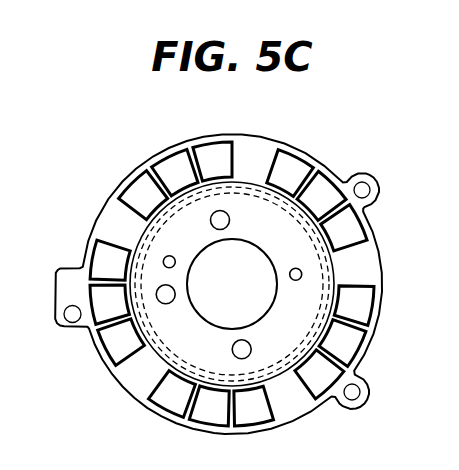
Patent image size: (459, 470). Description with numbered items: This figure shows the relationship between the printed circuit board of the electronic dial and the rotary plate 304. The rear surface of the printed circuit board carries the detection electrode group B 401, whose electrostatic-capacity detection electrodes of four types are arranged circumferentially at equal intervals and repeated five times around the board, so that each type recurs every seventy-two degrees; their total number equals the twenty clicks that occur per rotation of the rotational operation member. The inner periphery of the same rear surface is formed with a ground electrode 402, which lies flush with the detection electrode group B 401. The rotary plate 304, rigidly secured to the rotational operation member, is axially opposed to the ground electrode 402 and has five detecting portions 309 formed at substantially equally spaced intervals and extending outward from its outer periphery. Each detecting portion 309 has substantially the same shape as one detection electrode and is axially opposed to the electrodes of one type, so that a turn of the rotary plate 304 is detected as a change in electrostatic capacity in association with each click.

The detecting portion 309 is at (107, 218).
The rotary plate 304 is at (312, 273).
The detection electrode group B 401 is at (141, 180).
The ground electrode 402 is at (246, 188).